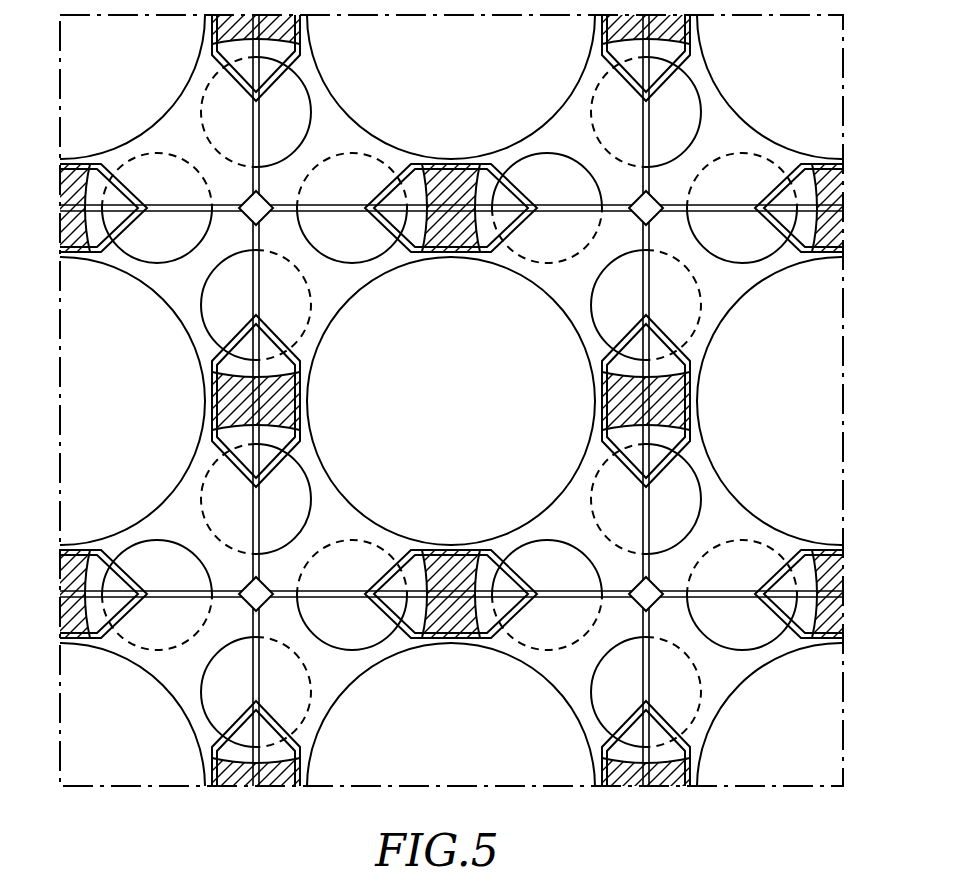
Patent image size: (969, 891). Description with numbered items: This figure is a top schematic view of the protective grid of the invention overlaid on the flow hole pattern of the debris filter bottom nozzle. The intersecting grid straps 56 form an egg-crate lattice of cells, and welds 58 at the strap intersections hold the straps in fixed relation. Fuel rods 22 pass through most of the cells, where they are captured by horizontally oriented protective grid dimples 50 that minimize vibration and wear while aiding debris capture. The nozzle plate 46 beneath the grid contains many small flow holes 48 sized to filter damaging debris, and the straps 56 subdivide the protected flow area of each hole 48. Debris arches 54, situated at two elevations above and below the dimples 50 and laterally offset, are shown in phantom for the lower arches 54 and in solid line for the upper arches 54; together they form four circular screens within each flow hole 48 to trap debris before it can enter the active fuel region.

The fuel rod 22 is at (97, 91).
The nozzle plate 46 is at (60, 181).
The flow hole 48 is at (268, 193).
The protective grid dimple 50 is at (426, 160).
The debris arch 54 is at (593, 308).
The grid strap 56 is at (182, 604).
The weld 58 is at (639, 194).